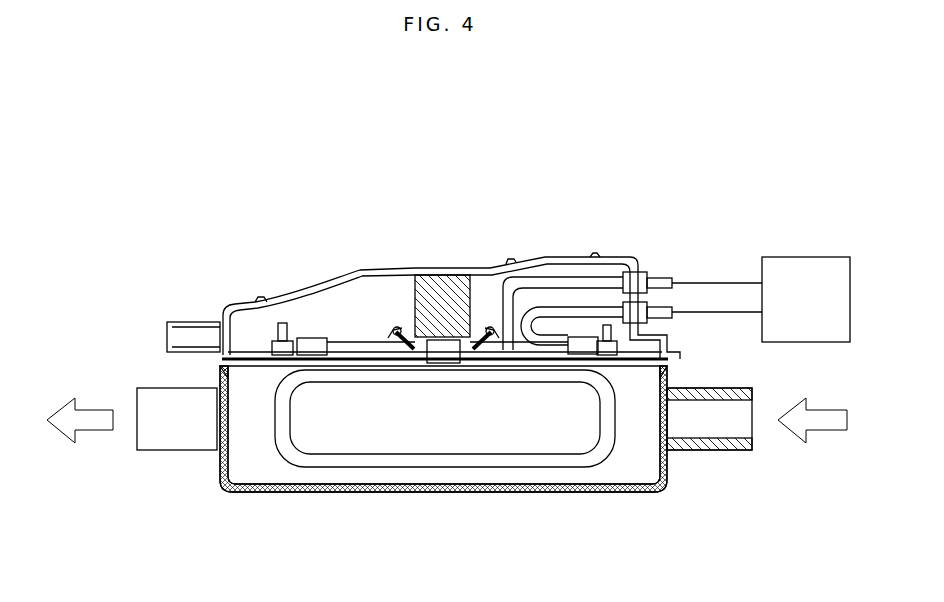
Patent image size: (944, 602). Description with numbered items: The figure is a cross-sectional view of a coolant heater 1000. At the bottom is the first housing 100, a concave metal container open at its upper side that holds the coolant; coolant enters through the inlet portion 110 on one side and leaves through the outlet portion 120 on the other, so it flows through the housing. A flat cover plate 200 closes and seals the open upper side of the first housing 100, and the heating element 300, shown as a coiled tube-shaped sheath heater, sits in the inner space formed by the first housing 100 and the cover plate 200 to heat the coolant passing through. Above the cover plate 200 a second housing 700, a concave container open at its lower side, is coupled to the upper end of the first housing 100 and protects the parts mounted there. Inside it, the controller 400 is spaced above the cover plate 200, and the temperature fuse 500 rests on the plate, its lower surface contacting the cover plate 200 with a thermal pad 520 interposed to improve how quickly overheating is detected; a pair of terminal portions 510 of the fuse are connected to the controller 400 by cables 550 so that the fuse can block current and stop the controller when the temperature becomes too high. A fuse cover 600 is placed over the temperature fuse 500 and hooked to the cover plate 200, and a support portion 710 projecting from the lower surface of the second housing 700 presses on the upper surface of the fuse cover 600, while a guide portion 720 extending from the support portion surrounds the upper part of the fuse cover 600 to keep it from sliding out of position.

The coolant heater 1000 is at (122, 203).
The first housing 100 is at (330, 492).
The inlet portion 110 is at (707, 452).
The outlet portion 120 is at (178, 452).
The cover plate 200 is at (245, 305).
The heating element 300 is at (425, 467).
The controller 400 is at (368, 340).
The temperature fuse 500 is at (440, 300).
The terminal portions 510 is at (397, 330).
The thermal pad 520 is at (455, 367).
The cables 550 is at (350, 340).
The fuse cover 600 is at (524, 318).
The second housing 700 is at (620, 257).
The support portion 710 is at (484, 330).
The guide portion 720 is at (508, 335).